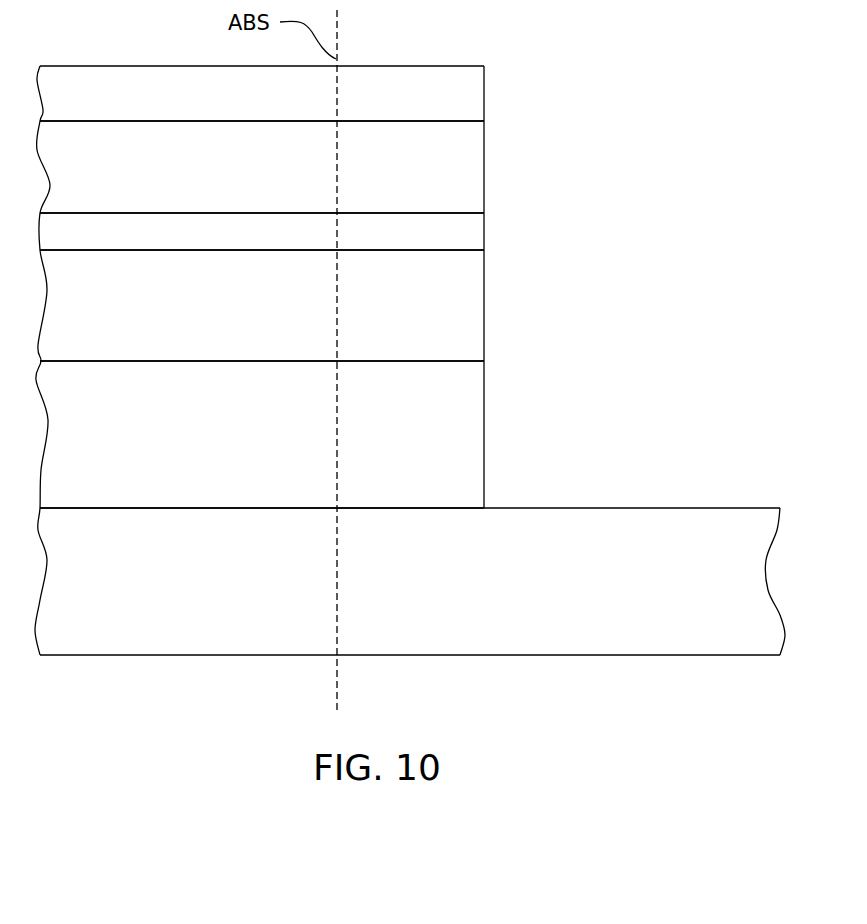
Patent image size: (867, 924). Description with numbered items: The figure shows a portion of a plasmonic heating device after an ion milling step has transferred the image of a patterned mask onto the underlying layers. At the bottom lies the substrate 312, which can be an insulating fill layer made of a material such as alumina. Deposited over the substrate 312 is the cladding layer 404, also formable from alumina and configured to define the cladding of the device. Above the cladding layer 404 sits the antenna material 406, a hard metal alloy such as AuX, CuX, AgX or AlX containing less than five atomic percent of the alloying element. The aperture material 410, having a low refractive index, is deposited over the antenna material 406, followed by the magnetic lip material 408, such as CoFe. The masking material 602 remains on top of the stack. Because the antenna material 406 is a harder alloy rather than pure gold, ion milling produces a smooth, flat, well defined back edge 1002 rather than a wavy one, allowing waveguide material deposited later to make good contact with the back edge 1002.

The masking material 602 is at (441, 100).
The magnetic lip material 408 is at (421, 173).
The aperture material 410 is at (425, 232).
The antenna material 406 is at (432, 304).
The cladding layer 404 is at (435, 434).
The back edge 1002 is at (487, 295).
The substrate 312 is at (497, 582).